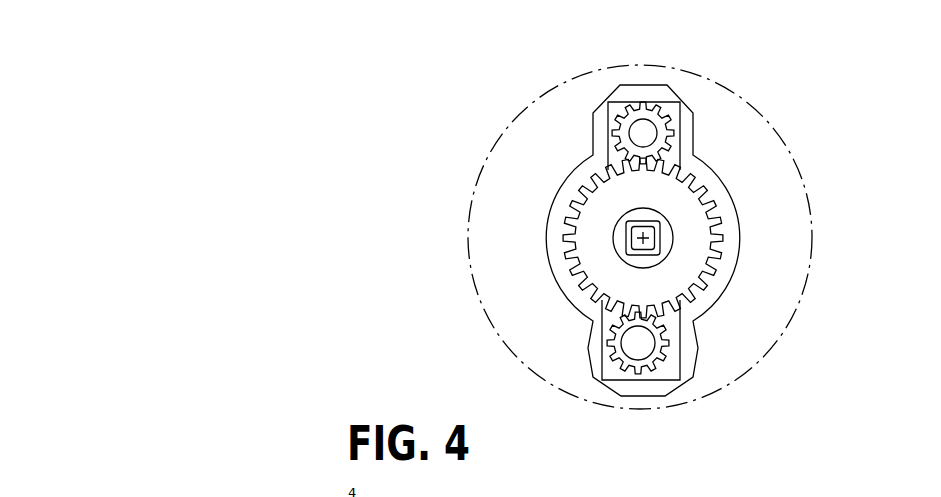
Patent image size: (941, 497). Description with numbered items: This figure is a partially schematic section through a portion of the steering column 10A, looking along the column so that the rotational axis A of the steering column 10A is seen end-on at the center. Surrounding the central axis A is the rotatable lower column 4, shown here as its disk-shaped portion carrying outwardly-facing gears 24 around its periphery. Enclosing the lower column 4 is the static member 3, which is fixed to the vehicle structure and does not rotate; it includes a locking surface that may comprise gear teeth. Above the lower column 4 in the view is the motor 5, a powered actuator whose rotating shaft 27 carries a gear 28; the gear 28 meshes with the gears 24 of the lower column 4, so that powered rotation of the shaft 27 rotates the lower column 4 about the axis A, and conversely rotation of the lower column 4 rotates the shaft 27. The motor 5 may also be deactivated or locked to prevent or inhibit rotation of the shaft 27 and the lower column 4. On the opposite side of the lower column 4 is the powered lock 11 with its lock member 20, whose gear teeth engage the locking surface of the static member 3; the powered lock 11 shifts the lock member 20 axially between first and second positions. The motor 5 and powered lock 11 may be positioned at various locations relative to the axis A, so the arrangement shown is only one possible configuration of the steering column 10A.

The static member 3 is at (738, 217).
The lower column 4 is at (664, 276).
The motor 5 is at (641, 102).
The steering column 10A is at (768, 164).
The powered lock 11 is at (638, 382).
The lock member 20 is at (612, 343).
The outwardly-facing gears 24 is at (713, 257).
The shaft 27 is at (645, 134).
The gear 28 is at (621, 111).
The axis A is at (640, 240).